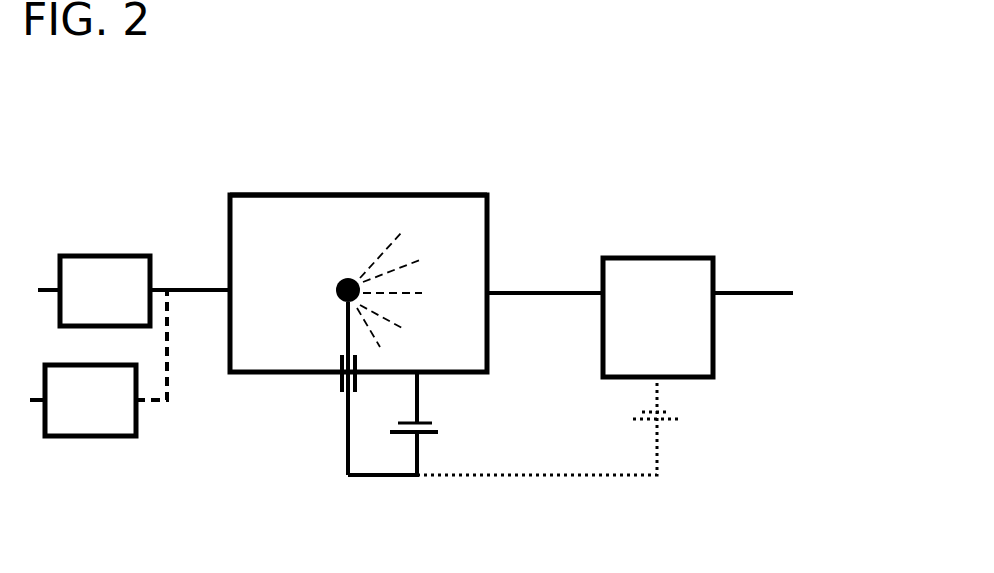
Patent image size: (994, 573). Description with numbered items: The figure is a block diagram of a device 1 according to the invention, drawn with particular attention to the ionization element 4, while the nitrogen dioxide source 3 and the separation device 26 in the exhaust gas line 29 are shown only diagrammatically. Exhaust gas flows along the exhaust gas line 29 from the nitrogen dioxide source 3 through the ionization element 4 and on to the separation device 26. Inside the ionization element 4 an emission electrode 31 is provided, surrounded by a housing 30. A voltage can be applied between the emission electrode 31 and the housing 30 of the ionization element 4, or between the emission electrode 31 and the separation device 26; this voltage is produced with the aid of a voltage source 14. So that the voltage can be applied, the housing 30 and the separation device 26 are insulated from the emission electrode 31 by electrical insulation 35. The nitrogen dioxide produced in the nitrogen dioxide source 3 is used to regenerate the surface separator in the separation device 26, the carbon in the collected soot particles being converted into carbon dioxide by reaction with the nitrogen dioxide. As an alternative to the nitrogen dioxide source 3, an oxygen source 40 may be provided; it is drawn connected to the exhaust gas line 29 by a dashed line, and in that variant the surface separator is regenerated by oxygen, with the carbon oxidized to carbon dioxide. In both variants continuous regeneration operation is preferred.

The device 1 is at (193, 125).
The nitrogen dioxide source 3 is at (106, 280).
The ionization element 4 is at (273, 194).
The voltage source 14 is at (407, 475).
The separation device 26 is at (670, 259).
The exhaust gas line 29 is at (226, 293).
The housing 30 is at (442, 194).
The emission electrode 31 is at (345, 280).
The electrical insulation 35 is at (340, 382).
The oxygen source 40 is at (112, 438).